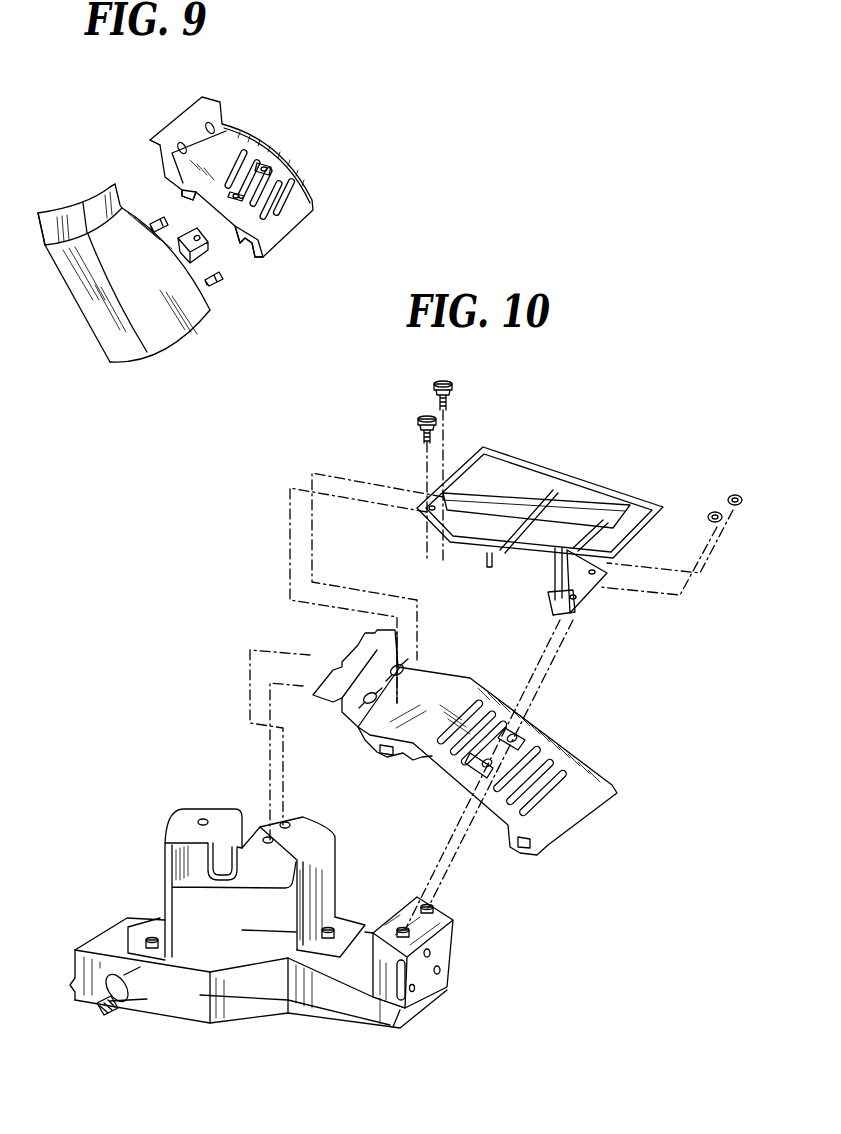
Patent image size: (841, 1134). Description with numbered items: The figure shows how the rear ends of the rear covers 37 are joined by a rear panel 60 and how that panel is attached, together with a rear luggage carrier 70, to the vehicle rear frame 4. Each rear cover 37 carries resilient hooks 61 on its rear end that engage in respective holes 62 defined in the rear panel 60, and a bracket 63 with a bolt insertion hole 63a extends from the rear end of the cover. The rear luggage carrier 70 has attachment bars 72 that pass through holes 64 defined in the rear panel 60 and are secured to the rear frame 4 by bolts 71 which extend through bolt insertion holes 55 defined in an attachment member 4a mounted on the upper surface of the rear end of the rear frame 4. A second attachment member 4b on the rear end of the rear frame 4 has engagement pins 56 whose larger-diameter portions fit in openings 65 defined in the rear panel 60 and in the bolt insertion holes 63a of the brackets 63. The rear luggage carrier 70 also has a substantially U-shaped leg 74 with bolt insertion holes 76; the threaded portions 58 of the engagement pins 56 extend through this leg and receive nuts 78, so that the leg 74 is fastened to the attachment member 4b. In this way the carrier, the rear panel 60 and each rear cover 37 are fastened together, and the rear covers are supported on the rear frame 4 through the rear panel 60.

In FIG. 10, the rear frame 4 is at (193, 997).
In FIG. 10, the attachment member 4a is at (260, 858).
In FIG. 10, the attachment member 4b is at (443, 943).
In FIG. 9, the rear cover 37 is at (158, 342).
In FIG. 10, the bolt insertion holes 55 is at (283, 822).
In FIG. 10, the engagement pins 56 is at (453, 918).
In FIG. 10, the threaded portions 58 is at (433, 907).
In FIG. 9, the rear panel 60 is at (260, 145).
In FIG. 10, the rear panel 60 is at (477, 738).
In FIG. 9, the resilient hooks 61 is at (160, 219).
In FIG. 9, the holes 62 is at (176, 188).
In FIG. 9, the bracket 63 is at (186, 257).
In FIG. 9, the bolt insertion hole 63a is at (207, 243).
In FIG. 9, the holes 64 is at (225, 120).
In FIG. 10, the holes 64 is at (377, 696).
In FIG. 9, the openings 65 is at (267, 166).
In FIG. 10, the openings 65 is at (517, 733).
In FIG. 10, the rear luggage carrier 70 is at (540, 519).
In FIG. 10, the bolts 71 is at (452, 400).
In FIG. 10, the attachment bars 72 is at (487, 492).
In FIG. 10, the leg 74 is at (550, 598).
In FIG. 10, the bolt insertion holes 76 is at (610, 593).
In FIG. 10, the nuts 78 is at (733, 493).